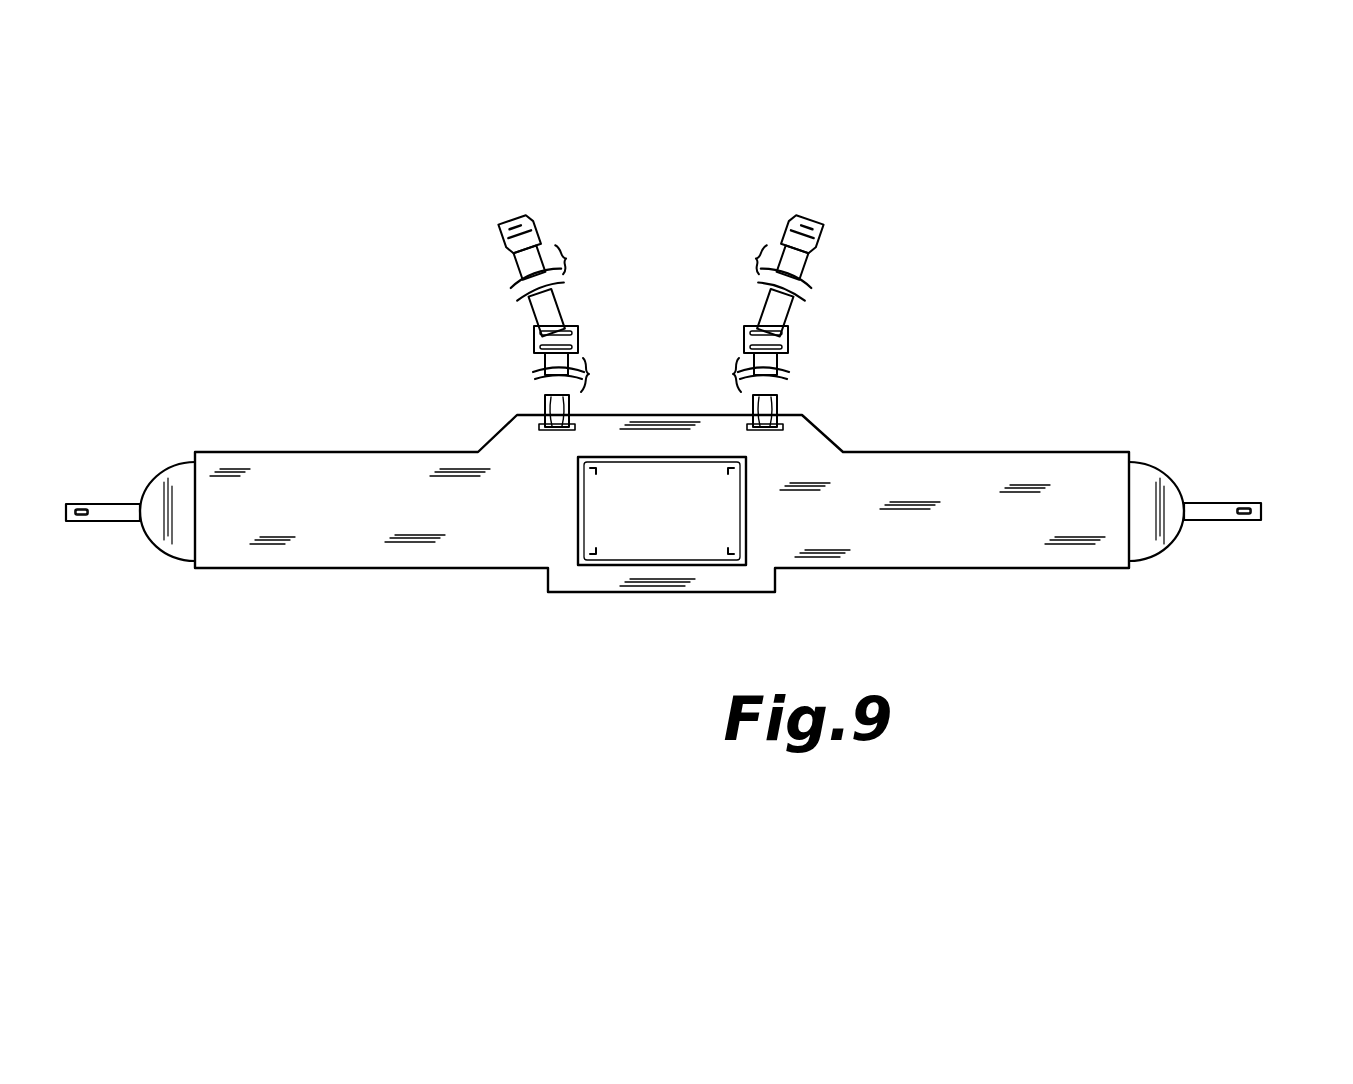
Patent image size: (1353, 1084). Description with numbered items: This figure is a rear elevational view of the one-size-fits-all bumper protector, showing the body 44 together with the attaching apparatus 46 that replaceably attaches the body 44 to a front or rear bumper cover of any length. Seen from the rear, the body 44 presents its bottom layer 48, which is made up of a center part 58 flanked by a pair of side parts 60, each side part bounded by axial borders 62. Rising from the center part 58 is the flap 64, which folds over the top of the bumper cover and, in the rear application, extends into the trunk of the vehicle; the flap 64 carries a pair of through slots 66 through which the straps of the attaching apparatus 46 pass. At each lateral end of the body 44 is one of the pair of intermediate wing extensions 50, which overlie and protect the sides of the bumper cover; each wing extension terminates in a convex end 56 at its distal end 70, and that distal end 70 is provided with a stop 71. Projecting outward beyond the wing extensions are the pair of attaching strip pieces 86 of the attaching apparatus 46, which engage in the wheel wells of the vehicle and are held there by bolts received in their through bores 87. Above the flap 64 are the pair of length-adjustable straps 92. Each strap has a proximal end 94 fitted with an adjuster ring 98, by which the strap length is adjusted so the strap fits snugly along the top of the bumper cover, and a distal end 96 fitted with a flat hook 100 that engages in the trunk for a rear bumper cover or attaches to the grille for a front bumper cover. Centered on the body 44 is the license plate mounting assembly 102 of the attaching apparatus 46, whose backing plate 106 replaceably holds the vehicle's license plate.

The body 44 is at (353, 449).
The attaching apparatus 46 is at (795, 313).
The bottom layer 48 is at (292, 477).
The pair of intermediate wing extensions 50 is at (162, 464).
The convex ends 56 is at (694, 502).
The distal end 70 is at (694, 502).
The stop 71 is at (140, 503).
The center part 58 is at (727, 594).
The pair of side parts 60 is at (333, 557).
The axial borders 62 is at (437, 571).
The flap 64 is at (600, 432).
The pair of through slots 66 is at (548, 410).
The pair of attaching strip pieces 86 is at (120, 522).
The through bores 87 is at (82, 522).
The pair of length-adjustable straps 92 is at (778, 262).
The proximal end 94 is at (748, 407).
The distal end 96 is at (780, 248).
The adjuster ring 98 is at (533, 345).
The flat hook 100 is at (797, 222).
The license plate mounting assembly 102 is at (662, 546).
The backing plate 106 is at (635, 523).